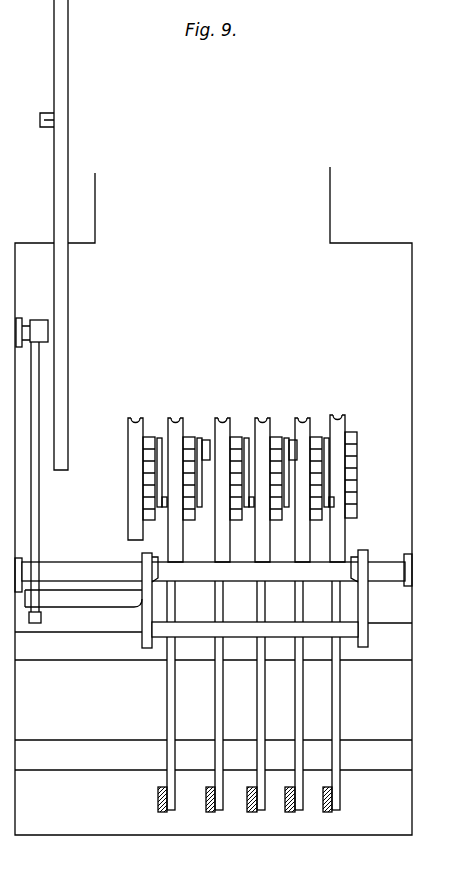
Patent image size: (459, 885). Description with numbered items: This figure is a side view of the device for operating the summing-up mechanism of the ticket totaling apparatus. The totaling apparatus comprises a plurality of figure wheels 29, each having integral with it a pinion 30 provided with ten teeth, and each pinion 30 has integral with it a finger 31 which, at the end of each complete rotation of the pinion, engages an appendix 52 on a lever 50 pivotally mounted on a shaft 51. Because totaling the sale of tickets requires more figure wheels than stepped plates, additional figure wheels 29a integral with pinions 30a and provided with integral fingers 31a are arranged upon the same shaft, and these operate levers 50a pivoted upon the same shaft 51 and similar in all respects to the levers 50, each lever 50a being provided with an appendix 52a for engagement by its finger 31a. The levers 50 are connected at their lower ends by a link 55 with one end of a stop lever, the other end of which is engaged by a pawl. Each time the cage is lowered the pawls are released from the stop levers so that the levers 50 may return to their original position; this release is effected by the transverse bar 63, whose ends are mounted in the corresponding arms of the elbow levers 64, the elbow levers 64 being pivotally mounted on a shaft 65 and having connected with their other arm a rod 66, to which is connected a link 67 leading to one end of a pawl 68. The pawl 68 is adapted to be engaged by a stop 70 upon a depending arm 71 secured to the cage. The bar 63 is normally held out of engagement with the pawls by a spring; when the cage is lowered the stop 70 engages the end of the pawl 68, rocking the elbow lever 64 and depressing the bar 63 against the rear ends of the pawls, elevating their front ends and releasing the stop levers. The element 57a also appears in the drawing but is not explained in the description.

The figure wheel 29 is at (174, 418).
The additional figure wheel 29a is at (337, 415).
The pinion 30 is at (148, 452).
The pinion 30a is at (356, 450).
The finger 31 is at (152, 507).
The finger 31a is at (312, 517).
The lever 50 is at (260, 703).
The lever 50a is at (333, 697).
The shaft 51 is at (213, 642).
The appendix 52 is at (158, 470).
The appendix 52a is at (325, 450).
The link 55 is at (208, 790).
The guide bar 57a is at (213, 755).
The transverse bar 63 is at (192, 628).
The elbow lever 64 is at (143, 614).
The shaft 65 is at (100, 567).
The rod 66 is at (68, 600).
The link 67 is at (36, 508).
The pawl 68 is at (43, 320).
The stop 70 is at (36, 121).
The depending arm 71 is at (60, 281).